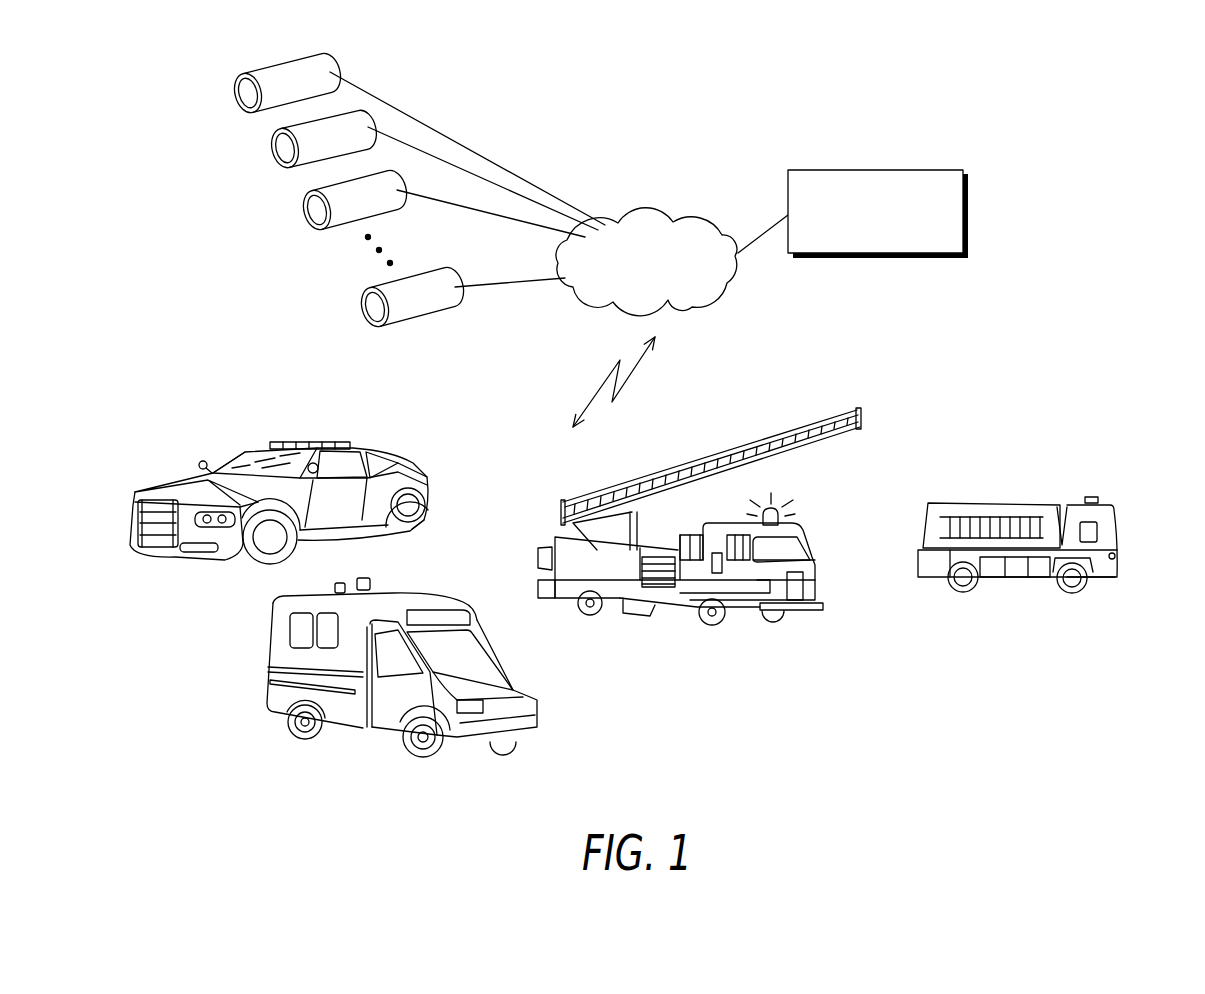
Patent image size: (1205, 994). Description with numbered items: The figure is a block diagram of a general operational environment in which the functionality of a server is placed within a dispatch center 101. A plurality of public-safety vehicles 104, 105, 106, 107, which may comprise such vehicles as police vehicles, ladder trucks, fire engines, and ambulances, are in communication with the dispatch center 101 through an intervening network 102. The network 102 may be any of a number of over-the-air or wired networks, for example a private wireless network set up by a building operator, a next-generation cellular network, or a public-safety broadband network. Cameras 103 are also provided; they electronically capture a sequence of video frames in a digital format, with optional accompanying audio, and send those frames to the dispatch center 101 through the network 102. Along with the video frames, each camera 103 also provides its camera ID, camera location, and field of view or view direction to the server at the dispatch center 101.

The dispatch center 101 is at (877, 170).
The network 102 is at (650, 210).
The cameras 103 is at (275, 60).
The public-safety vehicle 104 is at (412, 464).
The public-safety vehicle 105 is at (855, 413).
The public-safety vehicle 106 is at (1112, 503).
The public-safety vehicle 107 is at (527, 681).